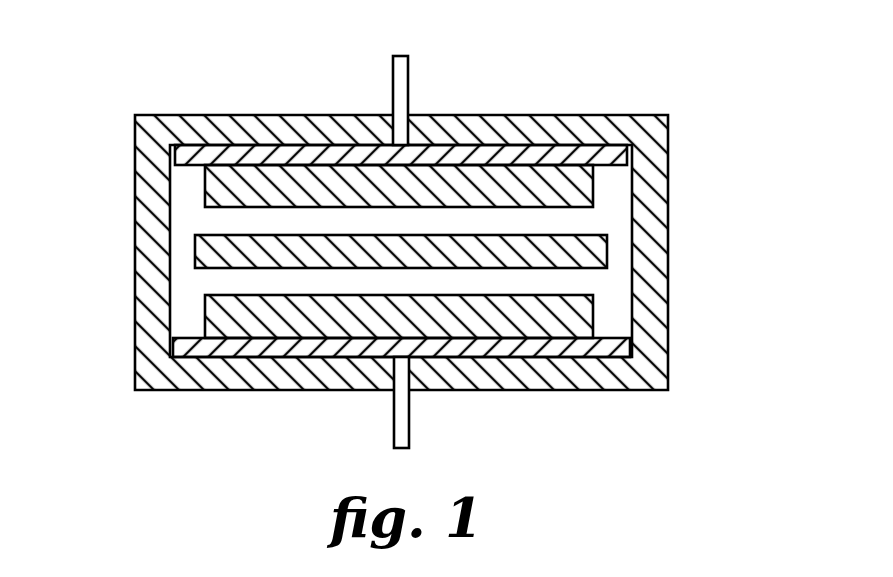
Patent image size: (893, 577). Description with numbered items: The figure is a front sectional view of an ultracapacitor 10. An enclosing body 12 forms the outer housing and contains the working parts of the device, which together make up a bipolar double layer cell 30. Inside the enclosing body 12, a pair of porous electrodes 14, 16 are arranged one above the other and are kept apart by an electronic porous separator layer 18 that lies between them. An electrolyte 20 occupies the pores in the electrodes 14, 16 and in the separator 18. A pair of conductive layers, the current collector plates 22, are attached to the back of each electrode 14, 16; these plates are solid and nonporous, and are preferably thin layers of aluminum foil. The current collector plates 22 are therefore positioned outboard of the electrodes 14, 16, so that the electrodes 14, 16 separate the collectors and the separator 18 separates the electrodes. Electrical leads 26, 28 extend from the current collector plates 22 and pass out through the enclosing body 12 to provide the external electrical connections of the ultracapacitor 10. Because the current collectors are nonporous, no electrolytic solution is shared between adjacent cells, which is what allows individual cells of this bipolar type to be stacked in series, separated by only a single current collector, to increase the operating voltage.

The ultracapacitor 10 is at (116, 103).
The enclosing body 12 is at (152, 350).
The electrode 14 is at (584, 176).
The electrode 16 is at (586, 296).
The electronic porous separator layer 18 is at (592, 243).
The electrolyte 20 is at (186, 186).
The current collector plate 22 is at (668, 150).
The electrical lead 26 is at (408, 68).
The electrical lead 28 is at (409, 417).
The bipolar double layer cell 30 is at (128, 150).